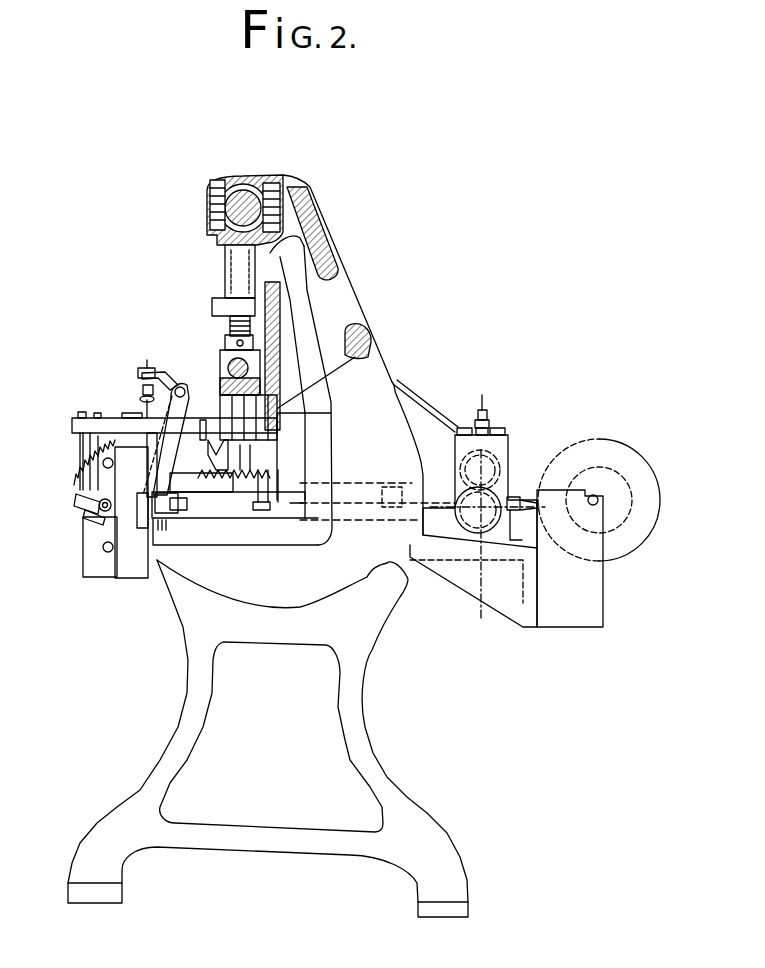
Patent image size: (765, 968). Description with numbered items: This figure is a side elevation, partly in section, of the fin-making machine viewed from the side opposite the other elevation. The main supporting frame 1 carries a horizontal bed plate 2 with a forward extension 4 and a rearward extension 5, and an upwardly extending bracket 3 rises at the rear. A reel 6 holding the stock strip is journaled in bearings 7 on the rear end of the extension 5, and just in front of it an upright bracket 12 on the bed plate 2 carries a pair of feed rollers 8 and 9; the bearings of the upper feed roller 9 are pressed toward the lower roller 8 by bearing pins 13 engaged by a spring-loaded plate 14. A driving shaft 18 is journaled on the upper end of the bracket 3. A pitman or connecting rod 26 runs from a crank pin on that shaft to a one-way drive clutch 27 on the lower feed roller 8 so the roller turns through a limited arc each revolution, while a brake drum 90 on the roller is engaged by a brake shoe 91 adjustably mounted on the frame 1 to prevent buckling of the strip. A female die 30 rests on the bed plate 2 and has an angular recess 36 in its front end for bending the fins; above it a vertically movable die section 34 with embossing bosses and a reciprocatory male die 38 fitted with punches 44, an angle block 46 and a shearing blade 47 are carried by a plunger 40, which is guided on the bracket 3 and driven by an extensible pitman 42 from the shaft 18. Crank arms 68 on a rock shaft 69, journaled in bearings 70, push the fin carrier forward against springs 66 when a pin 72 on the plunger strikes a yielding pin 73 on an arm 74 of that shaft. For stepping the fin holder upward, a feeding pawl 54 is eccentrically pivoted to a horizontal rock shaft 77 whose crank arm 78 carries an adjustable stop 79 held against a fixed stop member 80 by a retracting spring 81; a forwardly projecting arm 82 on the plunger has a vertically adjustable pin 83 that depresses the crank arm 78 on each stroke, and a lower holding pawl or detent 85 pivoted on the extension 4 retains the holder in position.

The main supporting frame 1 is at (352, 568).
The bed plate 2 is at (238, 510).
The upwardly extending bracket 3 is at (338, 277).
The forward extension 4 is at (135, 575).
The rearward extension 5 is at (550, 597).
The reel 6 is at (613, 448).
The bearings 7 is at (514, 508).
The lower feed roller 8 is at (460, 513).
The upper feed roller 9 is at (463, 470).
The upright bracket 12 is at (500, 443).
The bearing pins 13 is at (477, 430).
The plate 14 is at (492, 428).
The driving shaft 18 is at (246, 178).
The pitman or connecting rod 26 is at (420, 403).
The one-way drive clutch 27 is at (393, 487).
The female die 30 is at (233, 486).
The vertically movable die section 34 is at (255, 468).
The angular recess 36 is at (221, 478).
The male die 38 is at (275, 447).
The plunger 40 is at (280, 382).
The extensible pitman 42 is at (232, 300).
The punches 44 is at (250, 466).
The angle block 46 is at (222, 456).
The shearing blade 47 is at (202, 423).
The feeding pawl 54 is at (90, 478).
The springs 66 is at (187, 493).
The crank arms 68 is at (143, 390).
The rock shaft 69 is at (182, 386).
The bearings 70 is at (172, 383).
The stud or pin 72 is at (146, 407).
The yielding pin 73 is at (148, 362).
The arm 74 is at (143, 372).
The rock shaft 77 is at (86, 515).
The crank arm 78 is at (78, 503).
The adjustable stop 79 is at (92, 493).
The fixed stop member 80 is at (117, 500).
The retracting spring 81 is at (90, 457).
The forwardly projecting arm 82 is at (80, 424).
The vertically adjustable pin 83 is at (80, 443).
The lower holding pawl or detent 85 is at (117, 530).
The brake drum 90 is at (477, 533).
The brake shoe 91 is at (510, 498).